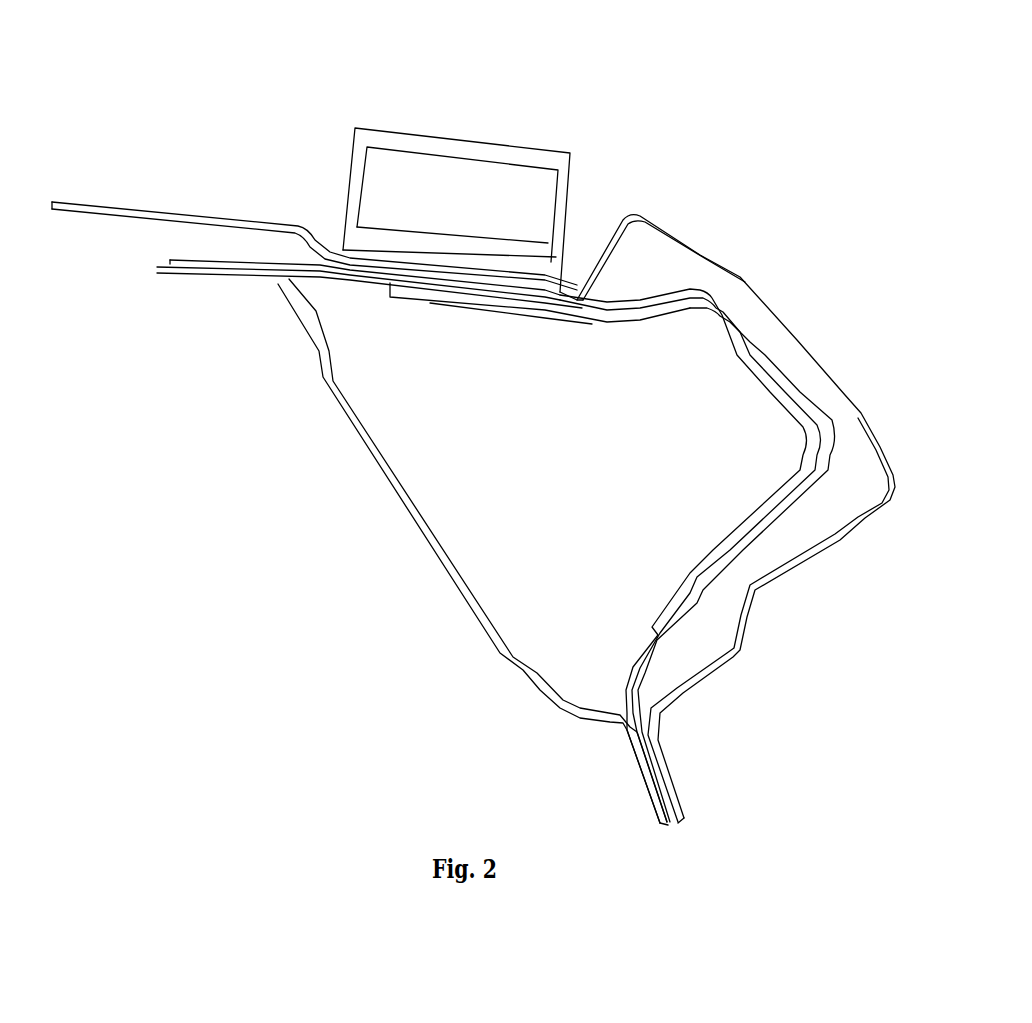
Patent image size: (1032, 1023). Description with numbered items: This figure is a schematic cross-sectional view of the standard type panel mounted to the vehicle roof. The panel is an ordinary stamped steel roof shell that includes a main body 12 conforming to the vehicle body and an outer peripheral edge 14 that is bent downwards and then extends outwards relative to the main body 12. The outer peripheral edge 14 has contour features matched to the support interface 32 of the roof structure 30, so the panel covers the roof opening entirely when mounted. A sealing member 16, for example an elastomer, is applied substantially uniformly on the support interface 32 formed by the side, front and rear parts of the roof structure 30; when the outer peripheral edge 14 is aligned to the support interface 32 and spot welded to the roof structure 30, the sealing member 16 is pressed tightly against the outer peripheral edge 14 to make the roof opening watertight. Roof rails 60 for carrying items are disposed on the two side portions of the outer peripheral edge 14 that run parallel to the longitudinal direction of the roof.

The main body 12 is at (110, 207).
The outer peripheral edge 14 is at (323, 254).
The sealing member 16 is at (435, 273).
The roof structure 30 is at (742, 278).
The support interface 32 is at (565, 292).
The roof rails 60 is at (475, 143).